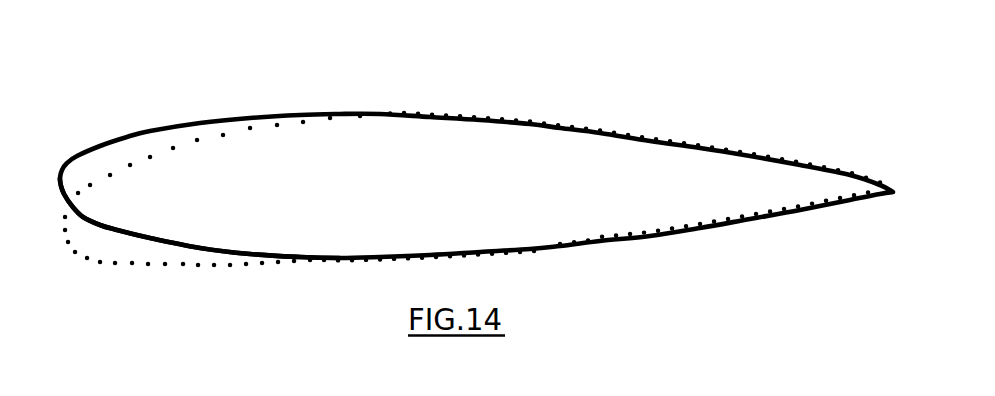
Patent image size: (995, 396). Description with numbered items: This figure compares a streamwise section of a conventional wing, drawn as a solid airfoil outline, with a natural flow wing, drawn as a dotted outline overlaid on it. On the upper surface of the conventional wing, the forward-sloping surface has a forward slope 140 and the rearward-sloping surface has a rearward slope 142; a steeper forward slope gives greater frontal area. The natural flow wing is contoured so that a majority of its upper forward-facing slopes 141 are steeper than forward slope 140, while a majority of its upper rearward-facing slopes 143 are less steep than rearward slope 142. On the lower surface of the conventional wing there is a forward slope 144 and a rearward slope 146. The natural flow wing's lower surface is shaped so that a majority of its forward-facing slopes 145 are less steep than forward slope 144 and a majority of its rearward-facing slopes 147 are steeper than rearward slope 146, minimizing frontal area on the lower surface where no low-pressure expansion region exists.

The forward slope 140 is at (127, 137).
The forward-facing slopes 141 is at (187, 144).
The rearward slope 142 is at (763, 157).
The rearward-facing slopes 143 is at (680, 142).
The forward slope 144 is at (140, 235).
The forward-facing slopes 145 is at (230, 265).
The rearward slope 146 is at (667, 235).
The rearward-facing slopes 147 is at (578, 247).